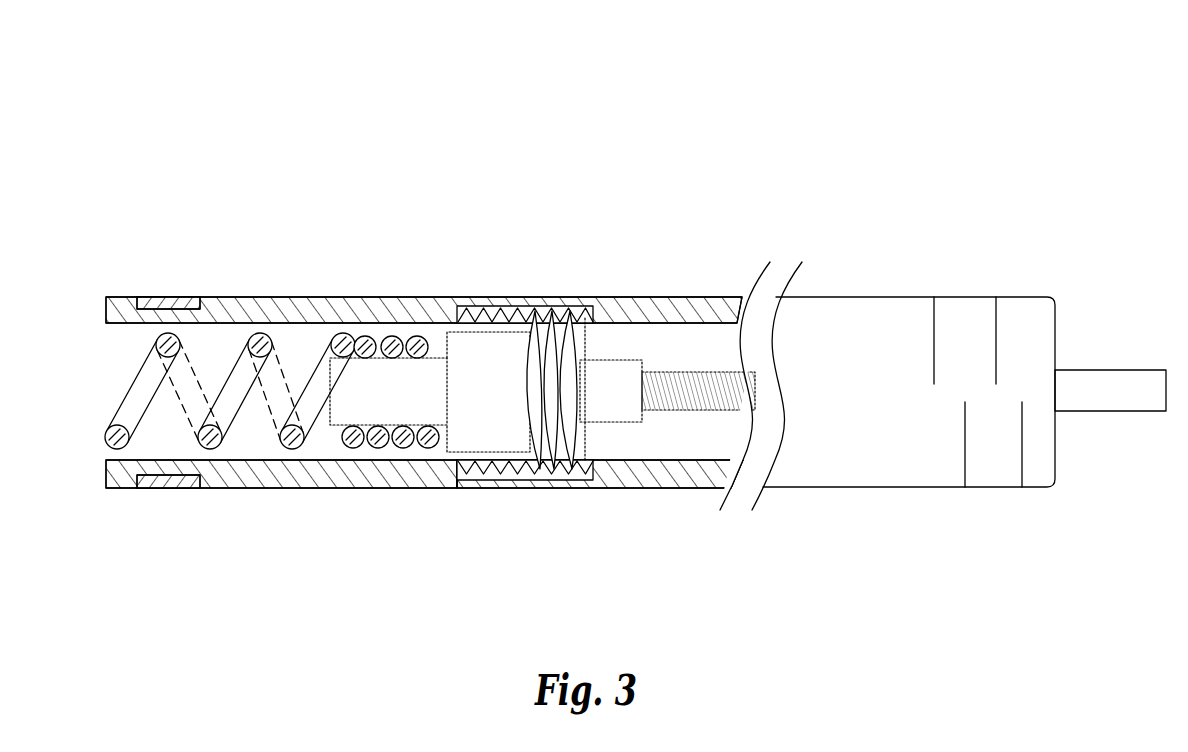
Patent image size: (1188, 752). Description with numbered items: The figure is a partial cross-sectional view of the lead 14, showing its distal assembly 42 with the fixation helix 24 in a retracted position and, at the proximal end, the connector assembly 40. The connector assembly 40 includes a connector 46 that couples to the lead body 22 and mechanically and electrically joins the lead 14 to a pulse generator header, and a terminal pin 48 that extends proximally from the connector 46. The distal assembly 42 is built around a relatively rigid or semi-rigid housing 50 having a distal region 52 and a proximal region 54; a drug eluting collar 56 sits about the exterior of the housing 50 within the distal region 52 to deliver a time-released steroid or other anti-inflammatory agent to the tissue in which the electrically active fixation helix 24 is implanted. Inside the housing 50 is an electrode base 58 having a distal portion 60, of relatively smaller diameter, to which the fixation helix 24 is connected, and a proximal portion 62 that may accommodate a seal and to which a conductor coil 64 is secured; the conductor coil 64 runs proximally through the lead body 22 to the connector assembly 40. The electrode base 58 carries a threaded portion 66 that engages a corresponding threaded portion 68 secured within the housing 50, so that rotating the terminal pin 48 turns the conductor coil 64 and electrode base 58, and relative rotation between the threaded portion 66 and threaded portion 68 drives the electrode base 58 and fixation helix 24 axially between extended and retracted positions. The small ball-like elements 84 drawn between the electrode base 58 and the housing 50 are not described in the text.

The lead 14 is at (470, 131).
The lead body 22 is at (830, 317).
The fixation helix 24 is at (122, 410).
The connector assembly 40 is at (987, 260).
The distal assembly 42 is at (350, 209).
The connector 46 is at (1003, 460).
The terminal pin 48 is at (1110, 395).
The housing 50 is at (263, 297).
The distal region 52 is at (221, 524).
The proximal region 54 is at (692, 521).
The drug eluting collar 56 is at (152, 297).
The electrode base 58 is at (485, 435).
The distal portion 60 is at (326, 447).
The proximal portion 62 is at (613, 400).
The conductor coil 64 is at (677, 377).
The threaded portion 66 is at (570, 350).
The threaded portion 68 is at (468, 307).
The ball bearings 84 is at (383, 345).